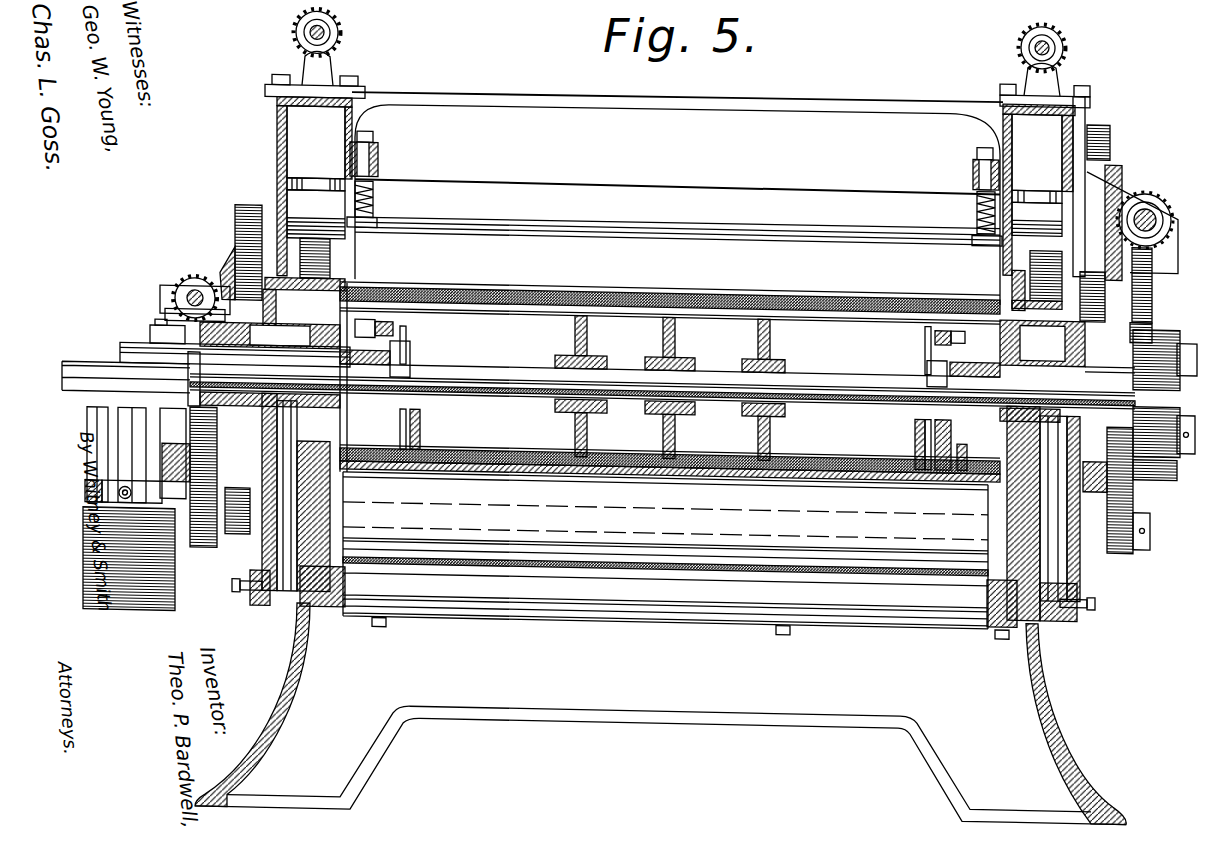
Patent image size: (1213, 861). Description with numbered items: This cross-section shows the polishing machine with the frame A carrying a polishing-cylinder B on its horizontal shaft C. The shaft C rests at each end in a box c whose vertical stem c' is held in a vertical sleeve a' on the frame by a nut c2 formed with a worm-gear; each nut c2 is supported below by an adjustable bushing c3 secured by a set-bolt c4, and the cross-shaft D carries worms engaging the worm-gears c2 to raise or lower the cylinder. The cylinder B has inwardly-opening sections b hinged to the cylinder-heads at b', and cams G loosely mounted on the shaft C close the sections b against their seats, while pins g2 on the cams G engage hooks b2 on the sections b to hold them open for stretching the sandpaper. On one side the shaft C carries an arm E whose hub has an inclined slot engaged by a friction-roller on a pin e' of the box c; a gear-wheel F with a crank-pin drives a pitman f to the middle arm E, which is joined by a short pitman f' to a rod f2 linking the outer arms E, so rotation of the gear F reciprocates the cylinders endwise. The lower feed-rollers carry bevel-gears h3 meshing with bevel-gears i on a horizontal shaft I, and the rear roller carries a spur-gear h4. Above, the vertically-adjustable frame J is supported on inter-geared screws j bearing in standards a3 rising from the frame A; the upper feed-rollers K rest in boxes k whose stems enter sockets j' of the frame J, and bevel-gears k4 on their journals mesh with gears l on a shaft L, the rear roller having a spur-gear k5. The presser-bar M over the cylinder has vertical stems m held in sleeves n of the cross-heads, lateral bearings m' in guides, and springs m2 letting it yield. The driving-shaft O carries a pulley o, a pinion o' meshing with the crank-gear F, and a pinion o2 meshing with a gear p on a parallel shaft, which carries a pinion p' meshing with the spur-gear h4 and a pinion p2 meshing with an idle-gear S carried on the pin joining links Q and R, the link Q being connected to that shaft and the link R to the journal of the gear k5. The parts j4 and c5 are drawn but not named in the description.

The left standard box j4 is at (314, 187).
The box k is at (663, 240).
The standard or post a3 is at (274, 190).
The spur-gear h4 is at (238, 215).
The bevel-gear h3 is at (226, 258).
The bevel-gear i is at (188, 276).
The horizontal shaft I is at (172, 296).
The pin e' is at (151, 327).
The box c is at (627, 342).
The vertically-adjustable frame J is at (671, 287).
The upper feed-roller K is at (677, 199).
The presser bar or plate M is at (677, 239).
The vertical sleeve a' is at (661, 405).
The inwardly-opening section b is at (670, 370).
The horizontal shaft C is at (511, 364).
The cam G is at (662, 332).
The polishing-cylinder B is at (711, 338).
The hinge or pivot b' is at (366, 330).
The pin or projection g2 is at (410, 322).
The incline or hook b2 is at (420, 420).
The pinion p' is at (598, 387).
The cross-shaft D is at (694, 545).
The frame A is at (660, 713).
The arm E is at (104, 436).
The pitman f is at (139, 455).
The gear-wheel F is at (190, 432).
The rod f2 is at (96, 478).
The short pitman f' is at (132, 507).
The feed-roller and vibrator driving-shaft O is at (178, 540).
The pulley o is at (130, 615).
The pinion o' is at (227, 529).
The vertical stem c' is at (671, 506).
The nut c2 is at (252, 570).
The set-bolt c4 is at (244, 586).
The bracket c5 is at (298, 602).
The bushing c3 is at (1040, 604).
The socket j' is at (1044, 186).
The vertical stem m is at (675, 143).
The vertical sleeve n is at (972, 160).
The spring m2 is at (975, 194).
The laterally-projecting bearing m' is at (674, 245).
The vertical inter-geared screw j is at (1019, 284).
The spur-gear k5 is at (1100, 103).
The bevel-gear k4 is at (1120, 172).
The shaft L is at (1157, 196).
The bevel-gear l is at (1152, 232).
The idle-gear S is at (1112, 272).
The link R is at (1150, 300).
The link Q is at (1168, 384).
The gear p is at (1155, 475).
The pinion p2 is at (1096, 474).
The pinion o2 is at (1140, 530).